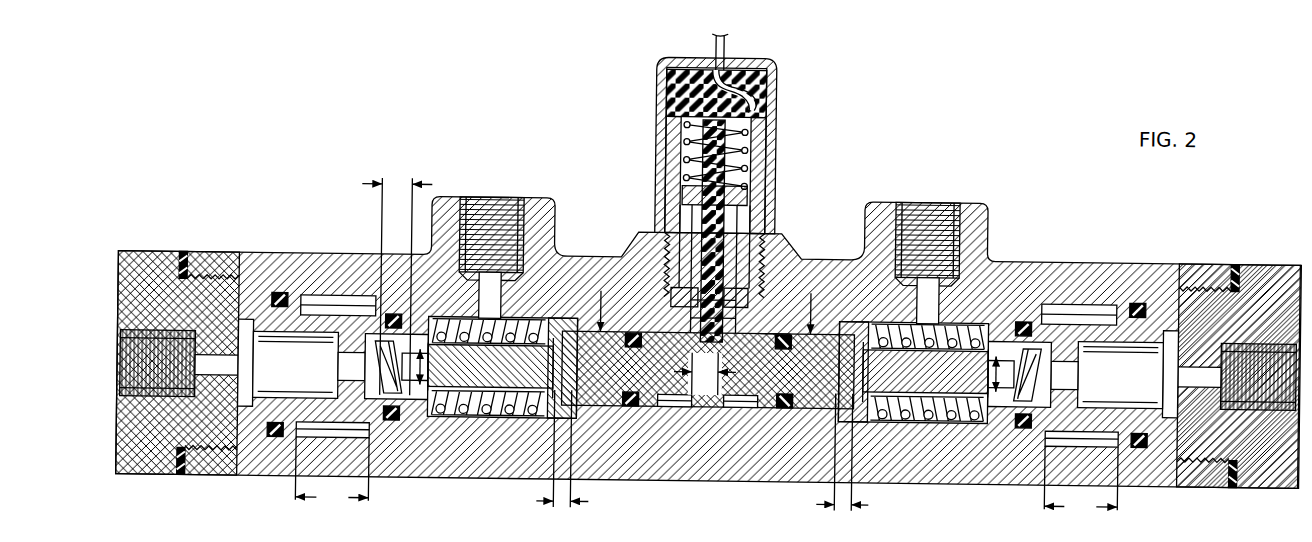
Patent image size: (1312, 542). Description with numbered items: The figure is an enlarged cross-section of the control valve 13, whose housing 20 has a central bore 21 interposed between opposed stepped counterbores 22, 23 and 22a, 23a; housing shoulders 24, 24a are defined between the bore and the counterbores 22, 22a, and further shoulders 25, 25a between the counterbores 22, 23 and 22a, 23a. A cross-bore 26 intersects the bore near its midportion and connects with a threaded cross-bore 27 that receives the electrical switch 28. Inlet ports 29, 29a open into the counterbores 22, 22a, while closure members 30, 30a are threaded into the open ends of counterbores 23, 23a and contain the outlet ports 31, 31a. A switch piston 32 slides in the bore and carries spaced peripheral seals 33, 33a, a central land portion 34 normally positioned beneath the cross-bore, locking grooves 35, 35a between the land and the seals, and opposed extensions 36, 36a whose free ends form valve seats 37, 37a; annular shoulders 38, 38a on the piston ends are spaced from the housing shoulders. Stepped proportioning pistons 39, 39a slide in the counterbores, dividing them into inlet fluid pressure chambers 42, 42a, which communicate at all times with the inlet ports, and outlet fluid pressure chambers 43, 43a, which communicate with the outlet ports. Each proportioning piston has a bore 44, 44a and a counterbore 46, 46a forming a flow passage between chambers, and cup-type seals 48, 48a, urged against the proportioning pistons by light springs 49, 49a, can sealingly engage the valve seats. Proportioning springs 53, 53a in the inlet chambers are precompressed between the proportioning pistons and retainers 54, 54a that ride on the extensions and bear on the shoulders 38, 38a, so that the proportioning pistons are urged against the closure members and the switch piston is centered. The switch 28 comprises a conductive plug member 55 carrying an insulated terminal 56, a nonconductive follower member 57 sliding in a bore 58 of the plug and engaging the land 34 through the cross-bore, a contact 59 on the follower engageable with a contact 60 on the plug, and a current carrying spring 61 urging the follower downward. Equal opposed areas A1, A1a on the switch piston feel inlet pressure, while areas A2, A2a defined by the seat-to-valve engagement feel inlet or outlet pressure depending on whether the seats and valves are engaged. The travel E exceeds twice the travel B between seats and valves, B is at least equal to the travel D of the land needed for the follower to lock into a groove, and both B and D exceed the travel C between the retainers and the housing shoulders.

The control valve 13 is at (1169, 240).
The housing 20 is at (1104, 265).
The bore 21 is at (676, 409).
The counterbore 22 is at (893, 420).
The counterbore 22a is at (510, 420).
The counterbore 23 is at (1078, 443).
The counterbore 23a is at (332, 443).
The housing shoulder 24 is at (838, 322).
The housing shoulder 24a is at (582, 322).
The housing shoulder 25 is at (1062, 304).
The housing shoulder 25a is at (356, 305).
The cross-bore 26 is at (700, 320).
The threaded cross-bore 27 is at (750, 240).
The electrical switch 28 is at (780, 88).
The inlet port 29 is at (956, 222).
The inlet port 29a is at (514, 222).
The closure member 30 is at (1263, 270).
The closure member 30a is at (147, 265).
The outlet port 31 is at (1256, 406).
The outlet port 31a is at (156, 405).
The switch piston 32 is at (762, 333).
The peripheral seal 33 is at (780, 410).
The peripheral seal 33a is at (632, 410).
The land portion 34 is at (720, 409).
The locking groove 35 is at (800, 352).
The locking groove 35a is at (615, 352).
The extension 36 is at (892, 386).
The extension 36a is at (500, 386).
The valve seat 37 is at (1020, 426).
The valve seat 37a is at (397, 426).
The annular shoulder 38 is at (846, 404).
The annular shoulder 38a is at (572, 404).
The proportioning piston 39 is at (1142, 445).
The proportioning piston 39a is at (275, 445).
The inlet fluid pressure chamber 42 is at (932, 420).
The inlet fluid pressure chamber 42a is at (470, 420).
The outlet fluid pressure chamber 43 is at (1176, 340).
The outlet fluid pressure chamber 43a is at (242, 342).
The proportioning piston bore 44 is at (1078, 350).
The proportioning piston bore 44a is at (280, 346).
The proportioning piston counterbore 46 is at (1146, 342).
The proportioning piston counterbore 46a is at (309, 364).
The cup-type seal 48 is at (1068, 392).
The cup-type seal 48a is at (348, 394).
The spring 49 is at (1012, 338).
The spring 49a is at (398, 338).
The proportioning spring 53 is at (980, 422).
The proportioning spring 53a is at (436, 422).
The retainer 54 is at (860, 425).
The retainer 54a is at (556, 425).
The plug member 55 is at (766, 134).
The terminal 56 is at (722, 50).
The follower member 57 is at (700, 264).
The bore 58 is at (742, 266).
The contact 59 is at (758, 184).
The contact 60 is at (690, 215).
The current carrying spring 61 is at (688, 160).
The effective area A1 is at (814, 302).
The effective area A1a is at (595, 300).
The effective area A2 is at (973, 376).
The effective area A2a is at (445, 369).
The travel B is at (836, 292).
The travel C is at (703, 453).
The travel D is at (705, 374).
The travel E is at (706, 478).